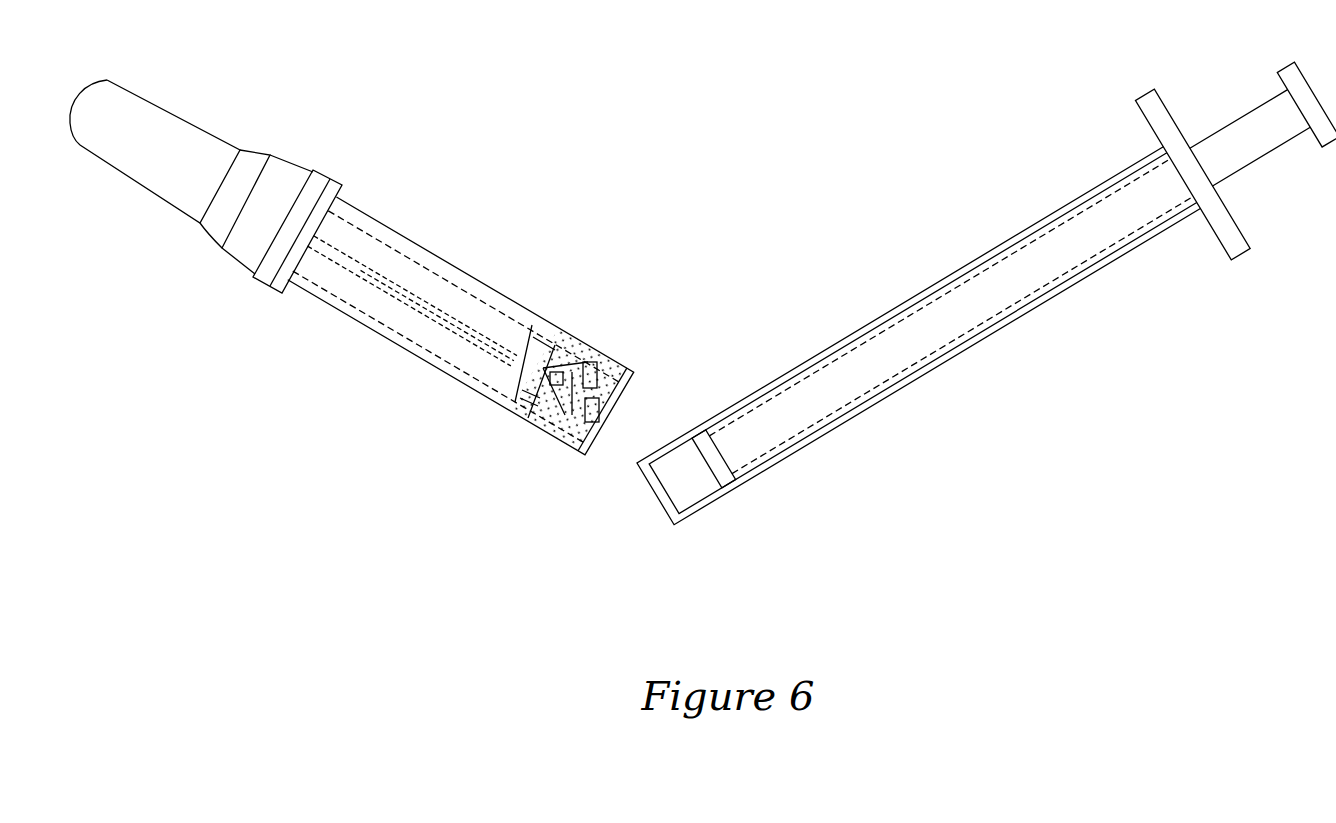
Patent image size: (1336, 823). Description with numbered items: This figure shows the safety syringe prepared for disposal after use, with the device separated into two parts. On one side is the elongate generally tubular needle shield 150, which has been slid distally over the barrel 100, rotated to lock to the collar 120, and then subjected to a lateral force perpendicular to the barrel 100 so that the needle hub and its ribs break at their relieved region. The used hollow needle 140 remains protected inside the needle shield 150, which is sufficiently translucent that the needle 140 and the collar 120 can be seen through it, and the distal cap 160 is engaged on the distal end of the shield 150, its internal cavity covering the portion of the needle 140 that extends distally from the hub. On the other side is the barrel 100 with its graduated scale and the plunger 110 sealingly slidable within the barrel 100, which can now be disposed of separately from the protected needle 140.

The barrel 100 is at (953, 358).
The plunger 110 is at (1238, 118).
The collar 120 is at (515, 403).
The hollow needle 140 is at (430, 312).
The elongate generally tubular needle shield 150 is at (485, 285).
The distal cap 160 is at (177, 117).